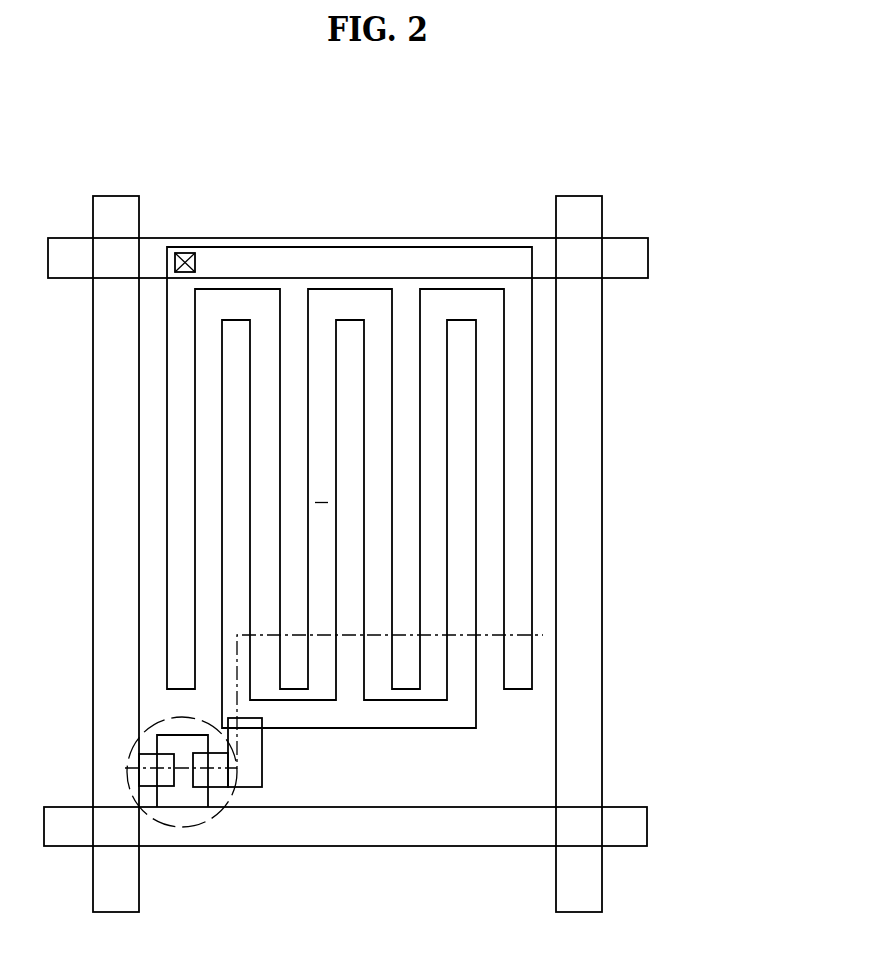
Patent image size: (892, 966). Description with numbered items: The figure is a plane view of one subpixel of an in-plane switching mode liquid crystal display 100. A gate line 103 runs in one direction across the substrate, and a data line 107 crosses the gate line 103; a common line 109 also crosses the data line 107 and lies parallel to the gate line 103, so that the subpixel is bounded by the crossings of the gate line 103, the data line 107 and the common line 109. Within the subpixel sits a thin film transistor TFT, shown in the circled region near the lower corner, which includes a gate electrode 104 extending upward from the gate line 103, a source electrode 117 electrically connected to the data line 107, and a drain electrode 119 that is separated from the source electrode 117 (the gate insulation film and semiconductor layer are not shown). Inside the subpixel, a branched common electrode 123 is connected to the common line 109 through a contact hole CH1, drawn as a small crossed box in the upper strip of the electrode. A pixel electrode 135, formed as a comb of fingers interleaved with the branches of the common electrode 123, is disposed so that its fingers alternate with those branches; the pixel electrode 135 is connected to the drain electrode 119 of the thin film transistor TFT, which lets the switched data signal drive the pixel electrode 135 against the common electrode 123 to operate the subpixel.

The in-plane switching mode liquid crystal display 100 is at (90, 102).
The data line 107 is at (117, 205).
The common line 109 is at (637, 259).
The gate line 103 is at (635, 827).
The branched common electrode 123 is at (517, 369).
The pixel electrode 135 is at (460, 712).
The gate electrode 104 is at (174, 743).
The source electrode 117 is at (152, 777).
The drain electrode 119 is at (227, 778).
The contact hole CH1 is at (185, 234).
The thin film transistor TFT is at (192, 837).